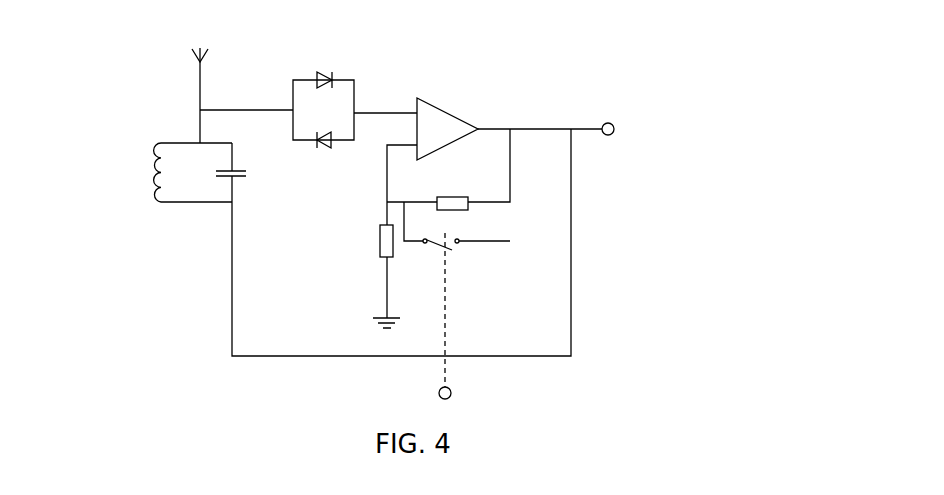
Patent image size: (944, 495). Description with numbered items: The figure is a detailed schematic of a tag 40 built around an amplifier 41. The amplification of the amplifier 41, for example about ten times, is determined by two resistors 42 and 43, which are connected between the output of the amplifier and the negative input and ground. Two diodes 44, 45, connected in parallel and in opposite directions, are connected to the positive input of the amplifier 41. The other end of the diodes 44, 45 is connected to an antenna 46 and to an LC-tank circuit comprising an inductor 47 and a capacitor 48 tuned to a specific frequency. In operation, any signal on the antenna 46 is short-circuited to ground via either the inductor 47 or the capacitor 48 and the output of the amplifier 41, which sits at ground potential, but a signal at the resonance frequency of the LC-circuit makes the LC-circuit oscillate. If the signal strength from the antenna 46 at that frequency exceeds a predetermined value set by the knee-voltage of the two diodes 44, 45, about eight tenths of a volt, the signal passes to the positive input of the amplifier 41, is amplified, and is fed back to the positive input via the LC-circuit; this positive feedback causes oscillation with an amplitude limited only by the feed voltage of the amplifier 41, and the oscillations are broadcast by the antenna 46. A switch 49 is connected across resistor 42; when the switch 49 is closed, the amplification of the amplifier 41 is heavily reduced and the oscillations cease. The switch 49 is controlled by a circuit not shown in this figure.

The tag 40 is at (523, 62).
The amplifier 41 is at (443, 110).
The resistor 42 is at (453, 197).
The resistor 43 is at (380, 240).
The diode 44 is at (317, 78).
The diode 45 is at (318, 150).
The antenna 46 is at (197, 72).
The inductor 47 is at (152, 180).
The capacitor 48 is at (223, 166).
The switch 49 is at (444, 248).